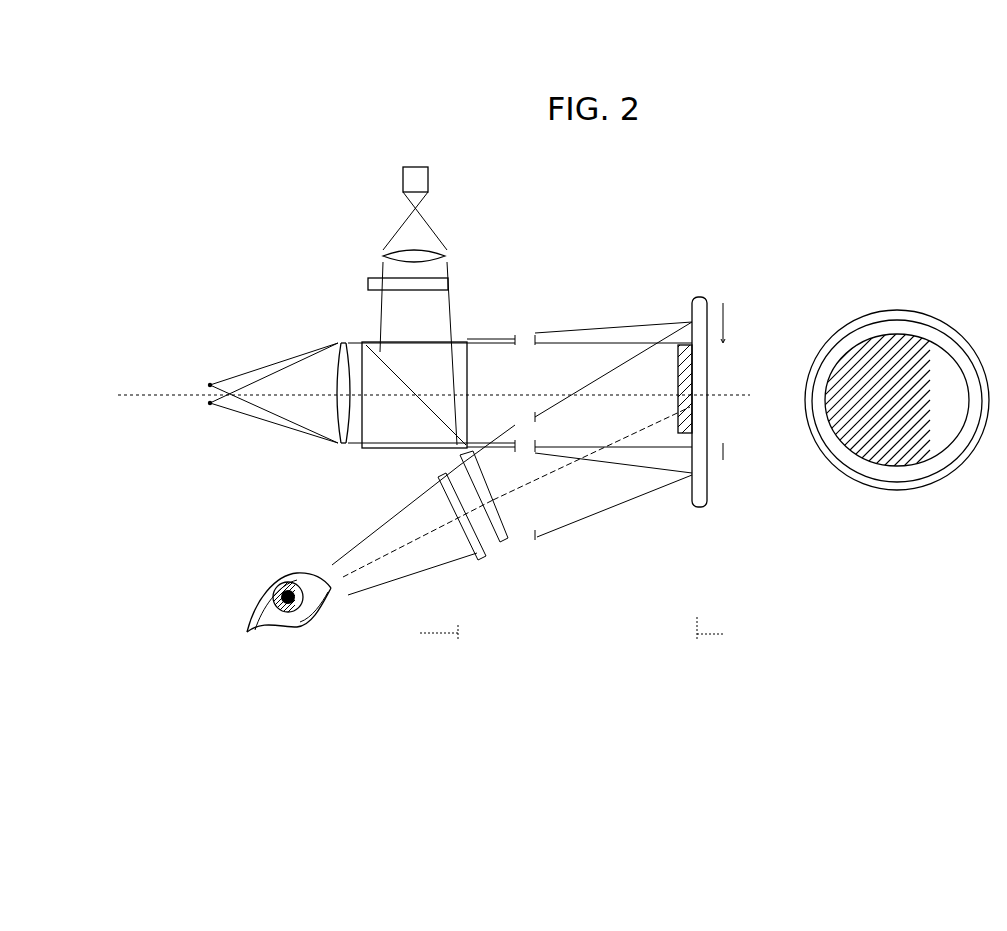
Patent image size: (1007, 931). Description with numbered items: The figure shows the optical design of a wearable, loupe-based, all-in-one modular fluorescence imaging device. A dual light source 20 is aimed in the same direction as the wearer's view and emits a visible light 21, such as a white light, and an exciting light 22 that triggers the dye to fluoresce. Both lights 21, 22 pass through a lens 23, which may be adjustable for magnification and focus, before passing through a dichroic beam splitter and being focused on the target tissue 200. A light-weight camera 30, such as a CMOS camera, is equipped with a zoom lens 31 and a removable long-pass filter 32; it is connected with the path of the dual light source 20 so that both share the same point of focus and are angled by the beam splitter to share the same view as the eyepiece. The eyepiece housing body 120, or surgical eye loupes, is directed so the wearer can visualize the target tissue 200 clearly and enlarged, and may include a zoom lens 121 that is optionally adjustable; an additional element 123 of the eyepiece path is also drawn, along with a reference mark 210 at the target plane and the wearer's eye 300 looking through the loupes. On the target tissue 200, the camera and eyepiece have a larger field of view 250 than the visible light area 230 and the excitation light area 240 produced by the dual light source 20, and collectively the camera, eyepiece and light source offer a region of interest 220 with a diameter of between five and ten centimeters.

The dual light source 20 is at (183, 394).
The visible light 21 is at (211, 382).
The exciting light 22 is at (210, 410).
The lens 23 is at (345, 345).
The camera 30 is at (416, 163).
The zoom lens 31 is at (441, 259).
The removable long-pass filter 32 is at (452, 288).
The eyepiece housing body 120 is at (529, 606).
The zoom lens 121 is at (480, 562).
The second plate 123 is at (509, 548).
The target tissue 200 is at (699, 290).
The reticle reference mark 210 is at (735, 633).
The region of interest 220 is at (690, 367).
The visible light area 230 is at (863, 474).
The excitation light area 240 is at (905, 464).
The field of view 250 is at (942, 478).
The eye of observer 300 is at (269, 630).